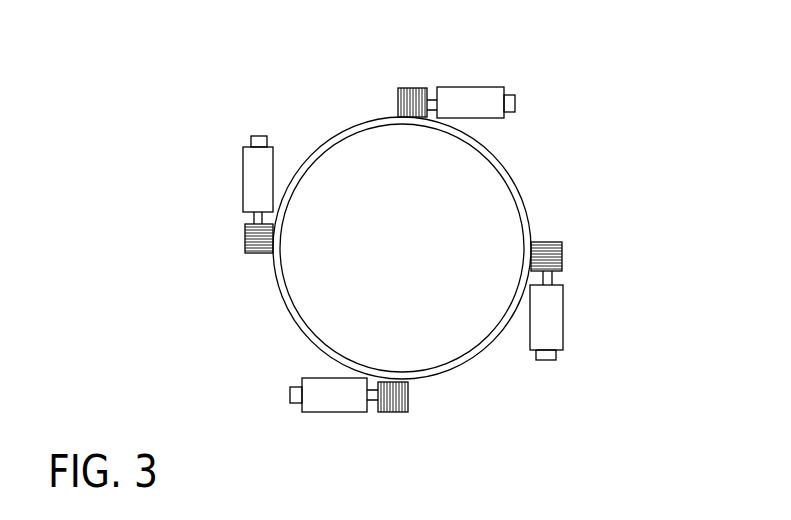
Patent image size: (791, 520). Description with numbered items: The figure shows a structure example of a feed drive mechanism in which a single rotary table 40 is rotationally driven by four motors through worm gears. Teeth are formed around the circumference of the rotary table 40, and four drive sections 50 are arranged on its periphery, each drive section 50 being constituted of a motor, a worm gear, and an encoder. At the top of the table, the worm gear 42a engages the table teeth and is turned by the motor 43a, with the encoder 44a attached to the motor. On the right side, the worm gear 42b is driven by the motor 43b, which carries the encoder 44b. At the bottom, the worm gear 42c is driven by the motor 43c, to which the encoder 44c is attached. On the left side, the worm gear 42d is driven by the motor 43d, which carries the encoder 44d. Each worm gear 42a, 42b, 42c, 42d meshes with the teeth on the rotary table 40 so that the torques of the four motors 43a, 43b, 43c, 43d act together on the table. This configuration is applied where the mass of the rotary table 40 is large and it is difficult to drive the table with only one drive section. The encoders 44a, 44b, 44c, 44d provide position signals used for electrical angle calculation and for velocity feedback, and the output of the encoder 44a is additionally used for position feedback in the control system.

The rotary table 40 is at (517, 182).
The drive section 50 is at (433, 79).
The worm gear 42a is at (397, 92).
The motor 43a is at (458, 87).
The encoder 44a is at (515, 104).
The worm gear 42b is at (562, 250).
The motor 43b is at (563, 315).
The encoder 44b is at (546, 360).
The worm gear 42c is at (408, 395).
The motor 43c is at (330, 413).
The encoder 44c is at (290, 395).
The worm gear 42d is at (245, 242).
The motor 43d is at (243, 181).
The encoder 44d is at (251, 138).